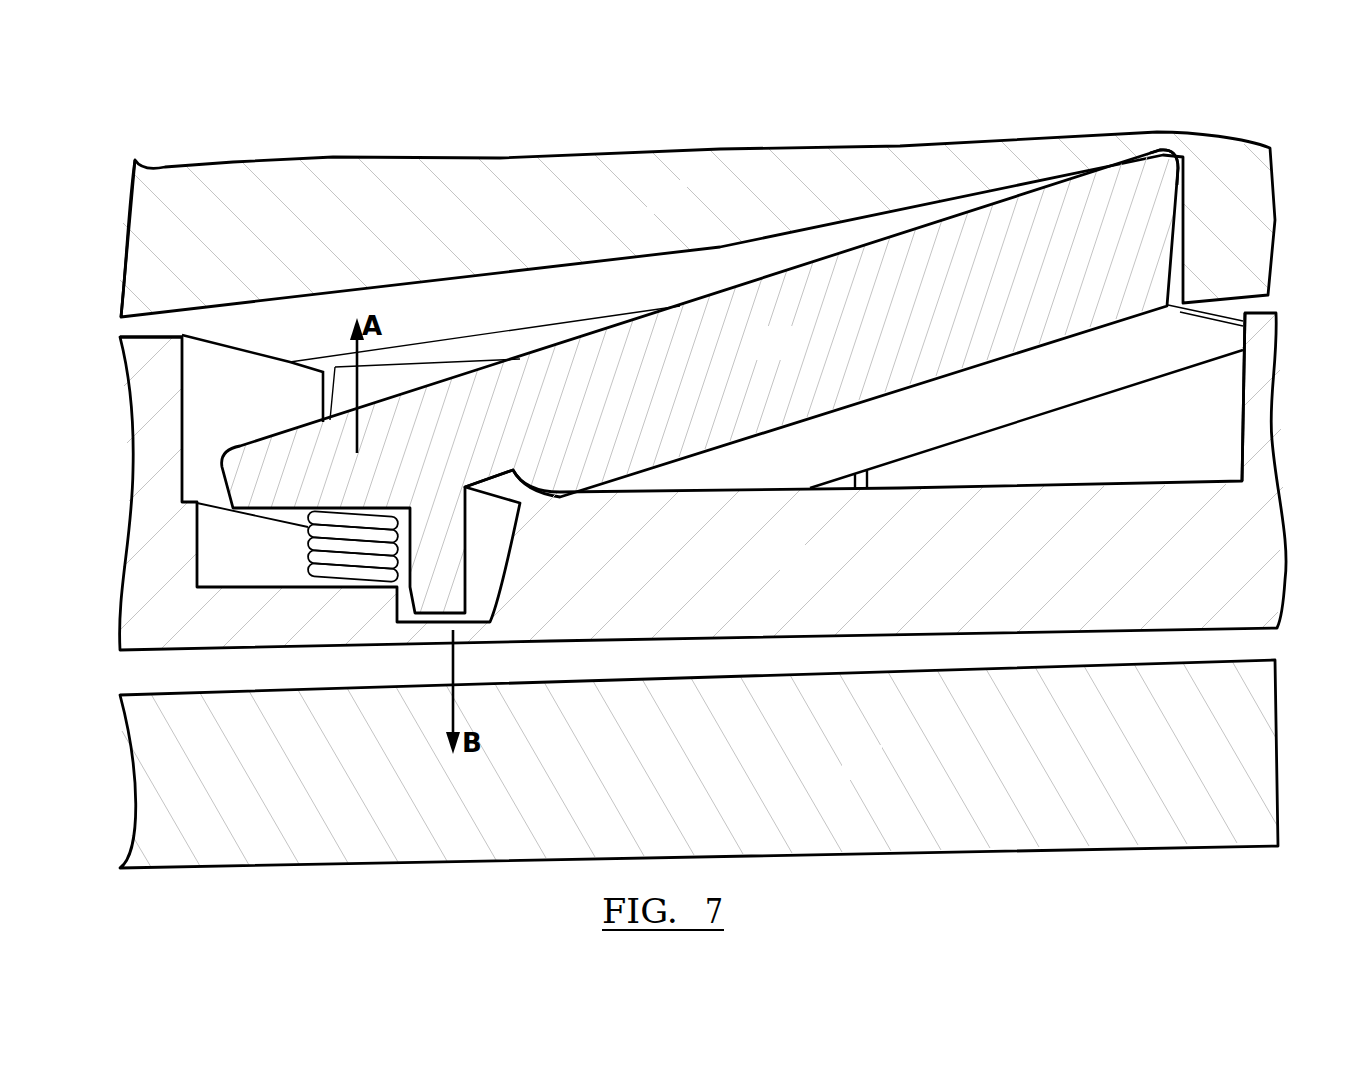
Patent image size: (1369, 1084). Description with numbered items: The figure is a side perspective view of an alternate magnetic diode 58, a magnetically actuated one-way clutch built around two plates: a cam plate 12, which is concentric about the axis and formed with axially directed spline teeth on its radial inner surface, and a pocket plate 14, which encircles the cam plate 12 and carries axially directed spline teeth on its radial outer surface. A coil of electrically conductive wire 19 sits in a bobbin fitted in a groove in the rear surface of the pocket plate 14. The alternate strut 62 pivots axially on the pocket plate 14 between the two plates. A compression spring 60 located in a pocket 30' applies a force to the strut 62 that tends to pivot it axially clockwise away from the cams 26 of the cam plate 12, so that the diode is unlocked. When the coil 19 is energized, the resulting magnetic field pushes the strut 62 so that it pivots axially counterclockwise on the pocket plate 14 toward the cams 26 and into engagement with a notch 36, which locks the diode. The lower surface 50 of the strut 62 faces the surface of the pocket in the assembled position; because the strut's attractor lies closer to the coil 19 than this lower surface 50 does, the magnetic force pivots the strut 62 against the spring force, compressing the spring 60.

The cam plate 12 is at (682, 210).
The pocket plate 14 is at (785, 576).
The coil of electrically conductive wire 19 is at (847, 777).
The cams 26 is at (237, 328).
The pocket 30' is at (1273, 397).
The notch 36 is at (1177, 210).
The lower surface 50 is at (1102, 362).
The magnetic diode 58 is at (90, 398).
The compression spring 60 is at (307, 560).
The alternate strut 62 is at (786, 356).